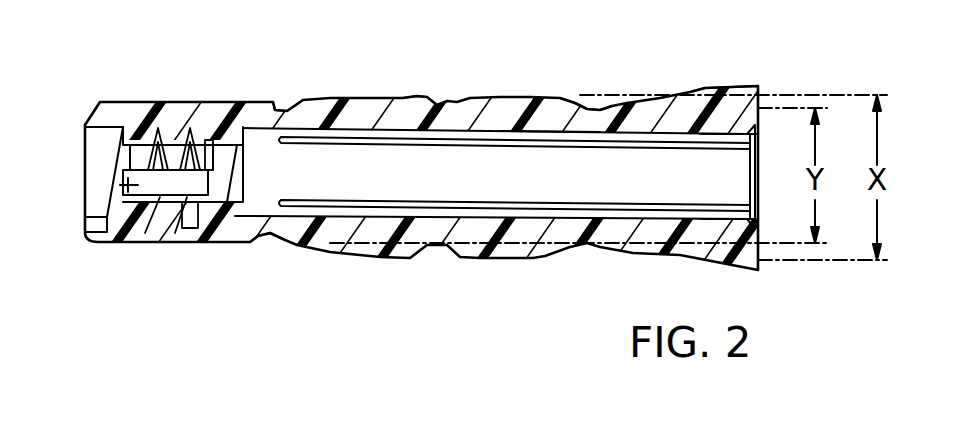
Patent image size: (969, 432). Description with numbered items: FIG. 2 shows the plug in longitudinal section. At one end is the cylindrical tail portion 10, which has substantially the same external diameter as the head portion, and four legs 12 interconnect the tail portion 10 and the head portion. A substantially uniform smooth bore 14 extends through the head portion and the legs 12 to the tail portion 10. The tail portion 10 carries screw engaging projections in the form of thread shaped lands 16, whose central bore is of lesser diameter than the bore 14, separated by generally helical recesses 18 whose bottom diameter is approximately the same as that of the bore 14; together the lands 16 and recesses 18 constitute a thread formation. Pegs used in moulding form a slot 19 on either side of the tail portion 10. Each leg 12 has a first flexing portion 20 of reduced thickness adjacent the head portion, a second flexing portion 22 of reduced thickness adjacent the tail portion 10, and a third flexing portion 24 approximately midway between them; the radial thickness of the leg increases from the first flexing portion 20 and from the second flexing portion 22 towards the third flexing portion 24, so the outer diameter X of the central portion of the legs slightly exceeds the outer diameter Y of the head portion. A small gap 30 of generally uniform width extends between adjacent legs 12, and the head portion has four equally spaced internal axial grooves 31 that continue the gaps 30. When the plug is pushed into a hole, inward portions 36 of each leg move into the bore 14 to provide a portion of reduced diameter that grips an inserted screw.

The tail portion 10 is at (142, 228).
The legs 12 is at (472, 113).
The bore 14 is at (258, 214).
The lands 16 is at (190, 133).
The recesses 18 is at (203, 138).
The slot 19 is at (120, 183).
The first flexing portion 20 is at (592, 108).
The second flexing portion 22 is at (282, 104).
The third flexing portion 24 is at (432, 99).
The gap 30 is at (545, 141).
The internal axial grooves 31 is at (685, 137).
The inward portions 36 is at (430, 227).